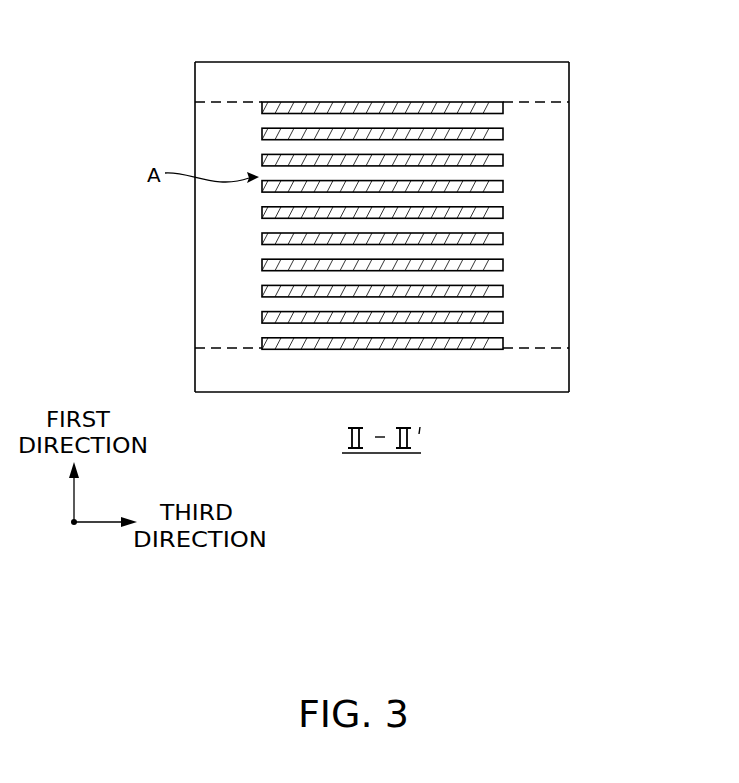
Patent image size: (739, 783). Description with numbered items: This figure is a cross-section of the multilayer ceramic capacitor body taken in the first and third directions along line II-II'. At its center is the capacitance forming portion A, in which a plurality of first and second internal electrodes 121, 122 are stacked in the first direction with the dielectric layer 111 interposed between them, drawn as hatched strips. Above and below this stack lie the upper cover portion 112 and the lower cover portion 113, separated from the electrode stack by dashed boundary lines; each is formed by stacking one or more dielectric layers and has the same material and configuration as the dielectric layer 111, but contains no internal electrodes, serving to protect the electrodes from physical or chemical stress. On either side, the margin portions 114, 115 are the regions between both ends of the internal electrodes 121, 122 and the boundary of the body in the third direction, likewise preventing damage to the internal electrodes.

The dielectric layer 111 is at (497, 122).
The upper cover portion 112 is at (392, 86).
The lower cover portion 113 is at (559, 372).
The margin portion 114 is at (218, 213).
The margin portion 115 is at (553, 231).
The first internal electrode 121 is at (504, 104).
The second internal electrode 122 is at (503, 130).